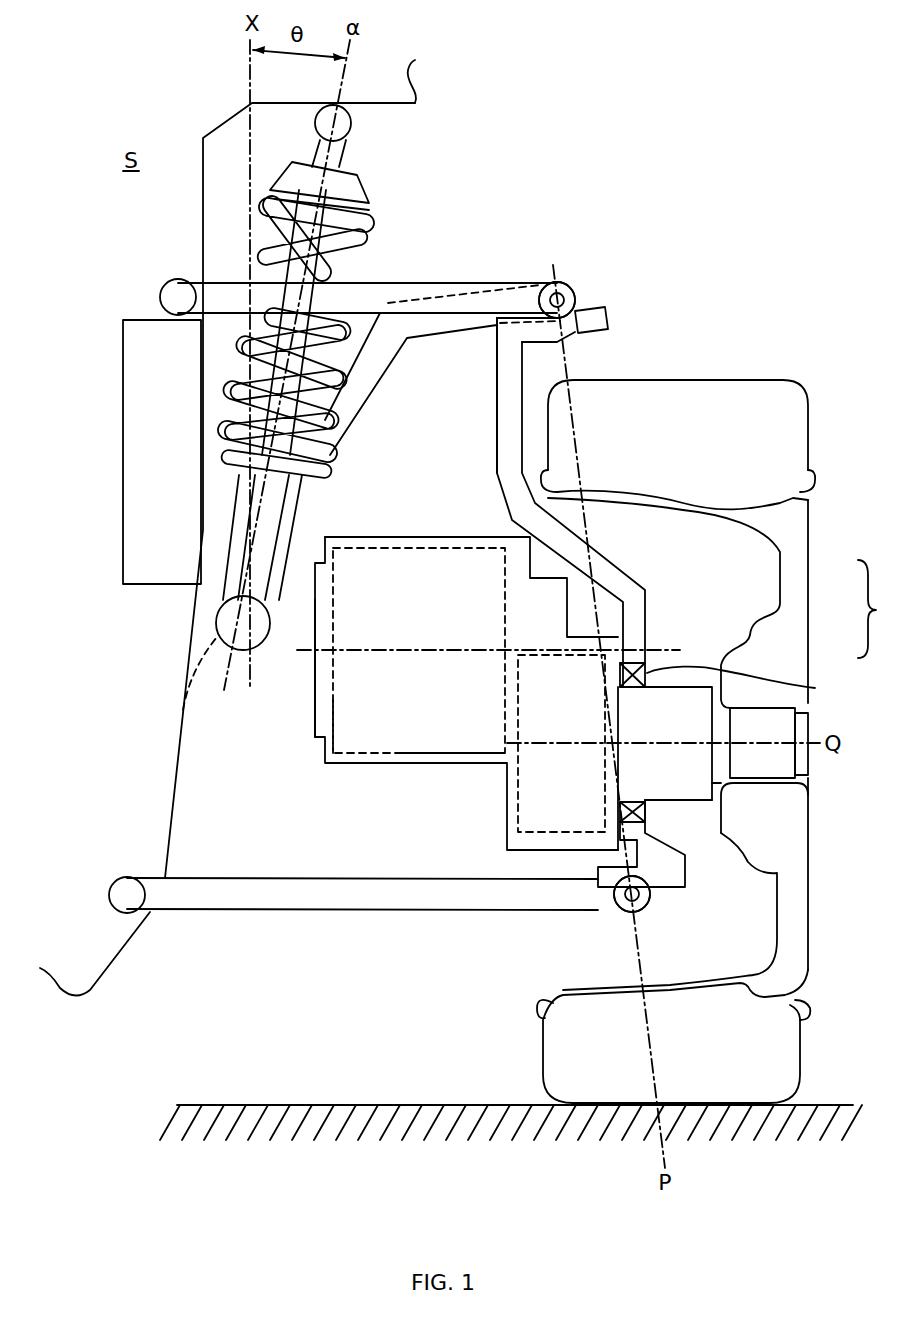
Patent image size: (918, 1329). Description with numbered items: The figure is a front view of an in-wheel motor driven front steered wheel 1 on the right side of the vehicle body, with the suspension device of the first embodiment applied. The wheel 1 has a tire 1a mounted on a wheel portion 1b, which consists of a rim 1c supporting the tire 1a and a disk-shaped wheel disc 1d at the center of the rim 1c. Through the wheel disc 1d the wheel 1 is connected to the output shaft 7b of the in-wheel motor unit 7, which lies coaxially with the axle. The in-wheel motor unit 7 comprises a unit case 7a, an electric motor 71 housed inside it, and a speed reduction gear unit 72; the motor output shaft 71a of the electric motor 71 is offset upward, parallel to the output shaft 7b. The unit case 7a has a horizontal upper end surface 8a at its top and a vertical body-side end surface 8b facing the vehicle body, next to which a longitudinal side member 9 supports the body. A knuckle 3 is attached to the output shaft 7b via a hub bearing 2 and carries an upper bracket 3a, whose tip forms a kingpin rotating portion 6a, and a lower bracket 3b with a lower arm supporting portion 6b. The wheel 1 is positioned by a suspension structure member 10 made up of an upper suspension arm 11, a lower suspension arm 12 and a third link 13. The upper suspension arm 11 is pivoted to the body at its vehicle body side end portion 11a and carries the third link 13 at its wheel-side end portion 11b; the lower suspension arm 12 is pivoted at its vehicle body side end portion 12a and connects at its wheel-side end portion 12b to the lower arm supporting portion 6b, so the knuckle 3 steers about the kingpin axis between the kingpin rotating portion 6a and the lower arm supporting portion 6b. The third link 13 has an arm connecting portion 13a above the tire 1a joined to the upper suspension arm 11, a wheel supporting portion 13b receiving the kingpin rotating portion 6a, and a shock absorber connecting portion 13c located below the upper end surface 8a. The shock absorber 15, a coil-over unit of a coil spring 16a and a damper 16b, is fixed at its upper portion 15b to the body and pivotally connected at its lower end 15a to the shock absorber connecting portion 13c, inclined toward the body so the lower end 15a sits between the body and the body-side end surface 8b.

The wheel 1 is at (720, 713).
The tire 1a is at (750, 392).
The wheel portion 1b is at (733, 748).
The rim 1c is at (790, 553).
The wheel disc 1d is at (773, 643).
The hub bearing 2 is at (808, 688).
The knuckle 3 is at (575, 600).
The upper bracket 3a is at (497, 447).
The lower bracket 3b is at (685, 857).
The kingpin rotating portion 6a is at (600, 318).
The lower arm supporting portion 6b is at (615, 895).
The in-wheel motor unit 7 is at (394, 604).
The unit case 7a is at (423, 717).
The output shaft 7b is at (683, 787).
The upper end surface 8a is at (422, 537).
The body-side end surface 8b is at (315, 718).
The side member 9 is at (137, 465).
The suspension structure member 10 is at (513, 236).
The upper suspension arm 11 is at (375, 267).
The vehicle body side end portion 11a is at (170, 297).
The wheel-side end portion 11b is at (565, 300).
The lower suspension arm 12 is at (364, 922).
The vehicle body side end portion 12a is at (120, 890).
The wheel-side end portion 12b is at (640, 912).
The third link 13 is at (401, 466).
The arm connecting portion 13a is at (574, 288).
The wheel supporting portion 13b is at (577, 335).
The shock absorber connecting portion 13c is at (183, 710).
The shock absorber 15 is at (290, 389).
The lower end 15a is at (217, 622).
The upper portion 15b is at (345, 118).
The coil spring 16a is at (278, 242).
The damper 16b is at (293, 517).
The electric motor 71 is at (362, 753).
The motor output shaft 71a is at (509, 650).
The speed reduction gear unit 72 is at (514, 805).